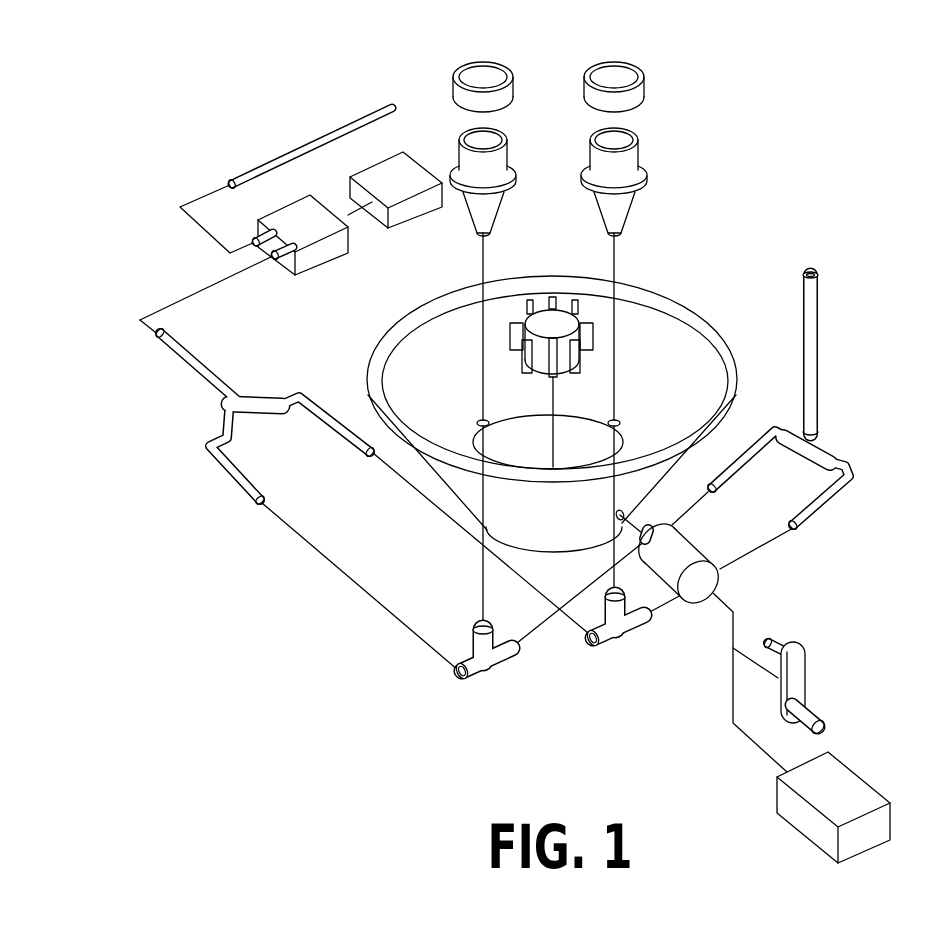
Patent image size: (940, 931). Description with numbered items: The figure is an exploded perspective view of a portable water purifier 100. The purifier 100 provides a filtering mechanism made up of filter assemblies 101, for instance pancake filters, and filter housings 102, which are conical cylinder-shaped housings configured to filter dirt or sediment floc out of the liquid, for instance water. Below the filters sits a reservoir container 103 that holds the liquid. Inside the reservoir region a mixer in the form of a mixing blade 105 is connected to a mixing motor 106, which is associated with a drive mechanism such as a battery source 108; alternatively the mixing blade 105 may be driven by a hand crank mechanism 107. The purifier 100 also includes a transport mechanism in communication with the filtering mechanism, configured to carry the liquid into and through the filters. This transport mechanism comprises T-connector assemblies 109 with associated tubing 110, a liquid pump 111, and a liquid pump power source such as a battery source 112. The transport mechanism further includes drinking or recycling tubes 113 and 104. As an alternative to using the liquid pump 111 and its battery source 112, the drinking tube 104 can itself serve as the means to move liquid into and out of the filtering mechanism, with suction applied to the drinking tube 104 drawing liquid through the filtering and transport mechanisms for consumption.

The portable water purifier 100 is at (858, 116).
The filter assemblies 101 is at (503, 93).
The filter housings 102 is at (513, 157).
The reservoir container 103 is at (657, 300).
The drinking tube 104 is at (810, 272).
The mixing blade 105 is at (555, 297).
The mixing motor 106 is at (707, 577).
The hand crank mechanism 107 is at (797, 662).
The battery source 108 is at (853, 795).
The T-connector assemblies 109 is at (610, 642).
The tubing 110 is at (207, 452).
The liquid pump 111 is at (318, 255).
The battery source 112 is at (408, 212).
The drinking or recycling tube 113 is at (262, 166).